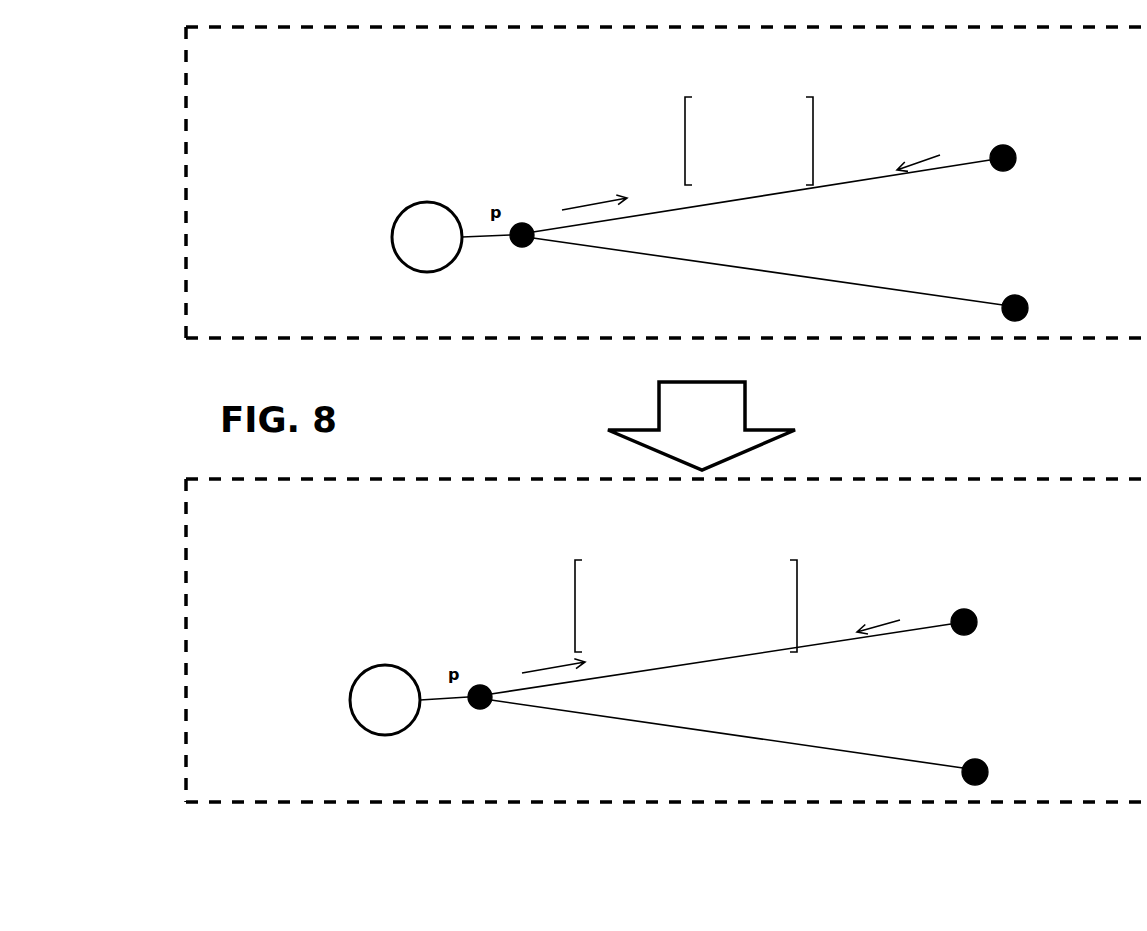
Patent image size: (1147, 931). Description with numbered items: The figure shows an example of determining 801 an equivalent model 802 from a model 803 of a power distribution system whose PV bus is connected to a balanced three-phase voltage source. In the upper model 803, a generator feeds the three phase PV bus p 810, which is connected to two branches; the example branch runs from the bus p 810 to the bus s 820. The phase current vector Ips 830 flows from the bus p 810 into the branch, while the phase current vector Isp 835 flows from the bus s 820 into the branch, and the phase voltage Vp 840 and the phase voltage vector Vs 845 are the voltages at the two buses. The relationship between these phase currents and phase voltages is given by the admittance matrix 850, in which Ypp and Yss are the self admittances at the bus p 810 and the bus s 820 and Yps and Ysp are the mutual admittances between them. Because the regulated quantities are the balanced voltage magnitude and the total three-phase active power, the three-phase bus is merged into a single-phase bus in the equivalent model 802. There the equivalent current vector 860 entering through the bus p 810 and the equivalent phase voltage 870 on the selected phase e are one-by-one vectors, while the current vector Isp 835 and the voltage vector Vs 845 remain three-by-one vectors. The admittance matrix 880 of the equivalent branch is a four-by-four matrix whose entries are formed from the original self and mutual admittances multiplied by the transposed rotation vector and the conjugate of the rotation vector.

The determining 801 is at (701, 426).
The equivalent model 802 is at (1085, 802).
The model of the power distribution system 803 is at (1085, 338).
The three phase PV bus p 810 is at (516, 223).
The bus s 820 is at (1017, 158).
The phase current vector Ips 830 is at (608, 170).
The phase current vector Isp 835 is at (945, 140).
The phase voltage Vp 840 is at (511, 290).
The phase voltage vector Vs 845 is at (1025, 198).
The admittance matrix 850 is at (795, 97).
The equivalent current vector Ieps 860 is at (560, 652).
The equivalent phase voltage Vep 870 is at (510, 735).
The admittance matrix of the equivalent branch 880 is at (720, 565).